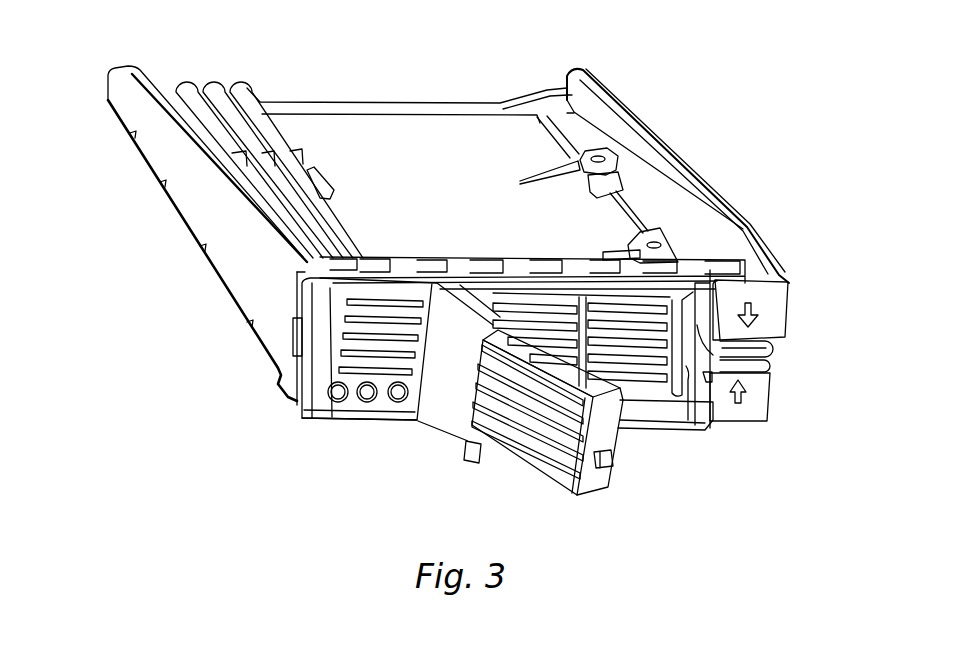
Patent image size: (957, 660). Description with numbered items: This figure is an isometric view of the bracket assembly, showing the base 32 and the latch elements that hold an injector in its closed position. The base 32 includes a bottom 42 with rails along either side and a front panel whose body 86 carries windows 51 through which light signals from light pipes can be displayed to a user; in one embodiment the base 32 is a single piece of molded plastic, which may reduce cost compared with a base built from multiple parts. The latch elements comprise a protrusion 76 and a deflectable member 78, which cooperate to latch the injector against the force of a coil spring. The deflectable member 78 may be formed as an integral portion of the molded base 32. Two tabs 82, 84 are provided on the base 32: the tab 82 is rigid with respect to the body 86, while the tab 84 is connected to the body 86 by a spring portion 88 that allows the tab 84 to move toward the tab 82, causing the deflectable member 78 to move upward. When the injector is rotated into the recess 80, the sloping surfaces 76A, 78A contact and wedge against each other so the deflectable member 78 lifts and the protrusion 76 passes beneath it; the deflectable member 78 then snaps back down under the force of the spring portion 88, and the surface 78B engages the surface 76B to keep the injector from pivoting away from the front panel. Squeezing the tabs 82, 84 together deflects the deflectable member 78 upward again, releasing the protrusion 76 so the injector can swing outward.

The base 32 is at (622, 106).
The bottom 42 is at (341, 366).
The windows 51 is at (340, 402).
The body 86 is at (378, 414).
The protrusion 76 is at (571, 435).
The sloping surface 76A is at (609, 453).
The surface 76B is at (593, 470).
The deflectable member 78 is at (708, 374).
The sloping surface 78A is at (701, 384).
The surface 78B is at (688, 374).
The recess 80 is at (689, 300).
The tab 82 is at (765, 343).
The tab 84 is at (762, 377).
The spring portion 88 is at (673, 430).